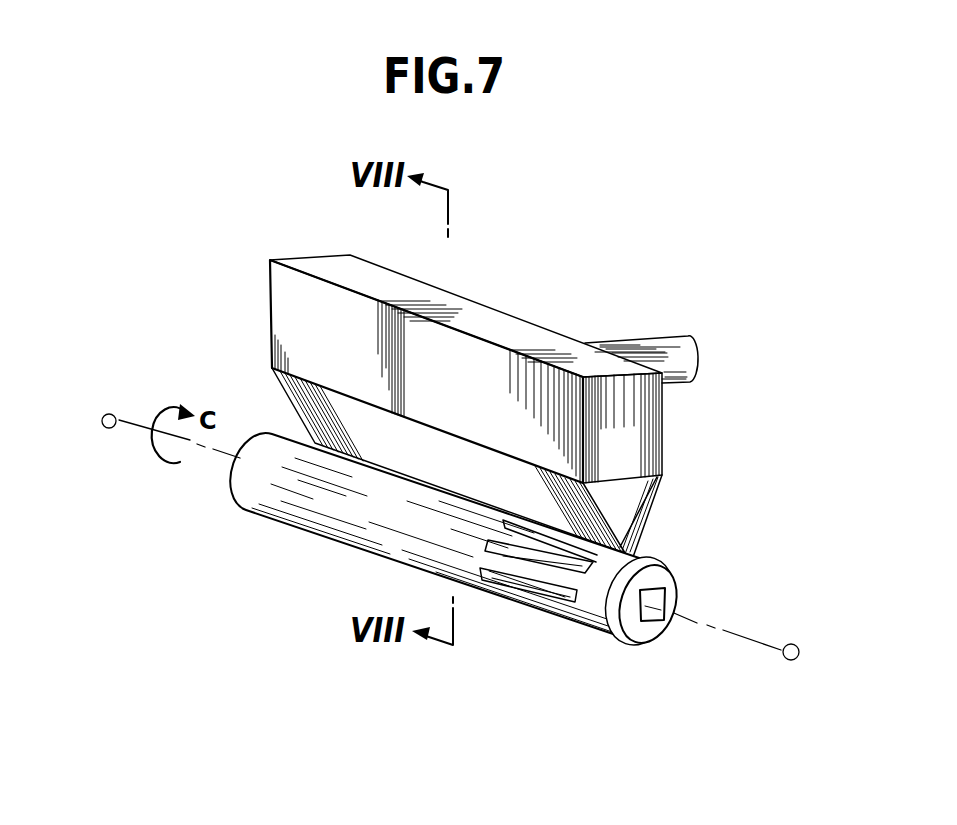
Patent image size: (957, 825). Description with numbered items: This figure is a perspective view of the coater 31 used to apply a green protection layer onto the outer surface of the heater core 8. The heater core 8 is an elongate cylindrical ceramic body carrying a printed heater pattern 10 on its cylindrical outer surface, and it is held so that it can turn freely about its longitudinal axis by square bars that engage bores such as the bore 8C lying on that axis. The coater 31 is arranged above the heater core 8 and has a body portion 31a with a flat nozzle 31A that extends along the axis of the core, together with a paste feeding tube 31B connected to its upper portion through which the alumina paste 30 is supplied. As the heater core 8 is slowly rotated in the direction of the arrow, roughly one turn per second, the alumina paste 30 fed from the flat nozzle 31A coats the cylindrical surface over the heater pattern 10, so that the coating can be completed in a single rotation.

The coater 31 is at (523, 262).
The holder body 31a is at (285, 297).
The flat nozzle 31A is at (387, 453).
The paste feeding tube 31B is at (635, 343).
The heater core 8 is at (293, 490).
The bore 8C is at (650, 621).
The heater pattern 10 is at (544, 597).
The alumina paste 30 is at (650, 558).